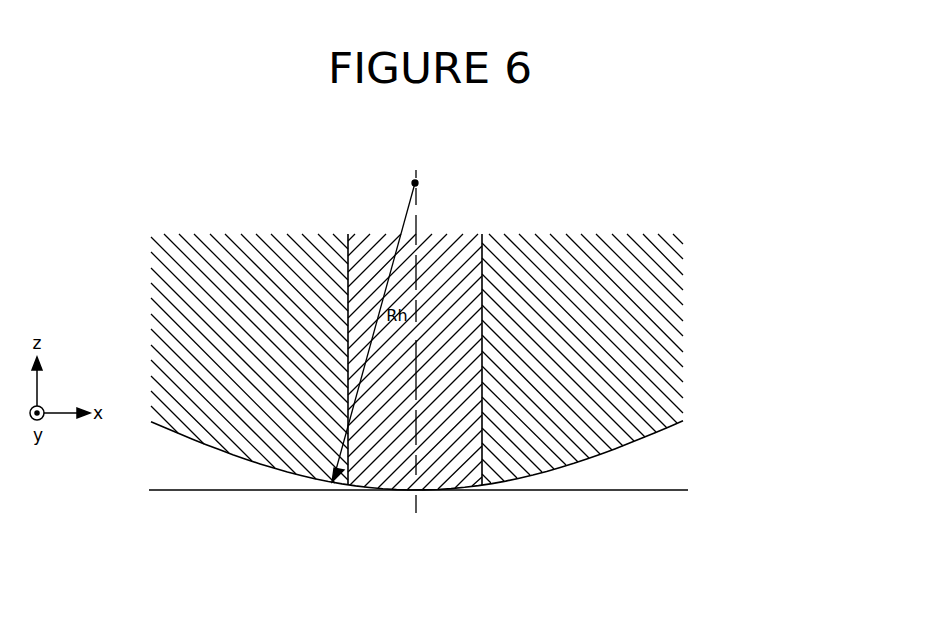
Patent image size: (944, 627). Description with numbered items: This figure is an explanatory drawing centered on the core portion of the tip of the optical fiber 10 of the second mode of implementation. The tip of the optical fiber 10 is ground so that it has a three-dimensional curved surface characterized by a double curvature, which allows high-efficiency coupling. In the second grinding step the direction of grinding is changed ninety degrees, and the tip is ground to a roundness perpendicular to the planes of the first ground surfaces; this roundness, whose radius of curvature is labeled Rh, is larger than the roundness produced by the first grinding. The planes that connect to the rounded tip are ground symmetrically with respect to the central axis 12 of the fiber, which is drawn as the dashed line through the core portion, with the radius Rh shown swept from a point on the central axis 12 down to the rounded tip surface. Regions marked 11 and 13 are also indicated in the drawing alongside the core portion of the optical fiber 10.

The optical fiber 10 is at (575, 496).
The zone boundary 11 is at (468, 243).
The central axis 12 is at (433, 262).
The outer zone 13 is at (568, 247).